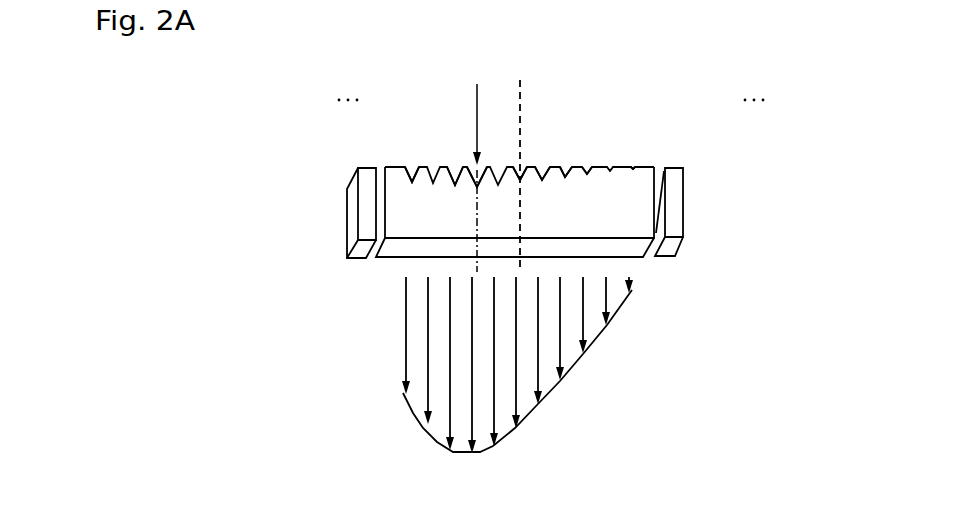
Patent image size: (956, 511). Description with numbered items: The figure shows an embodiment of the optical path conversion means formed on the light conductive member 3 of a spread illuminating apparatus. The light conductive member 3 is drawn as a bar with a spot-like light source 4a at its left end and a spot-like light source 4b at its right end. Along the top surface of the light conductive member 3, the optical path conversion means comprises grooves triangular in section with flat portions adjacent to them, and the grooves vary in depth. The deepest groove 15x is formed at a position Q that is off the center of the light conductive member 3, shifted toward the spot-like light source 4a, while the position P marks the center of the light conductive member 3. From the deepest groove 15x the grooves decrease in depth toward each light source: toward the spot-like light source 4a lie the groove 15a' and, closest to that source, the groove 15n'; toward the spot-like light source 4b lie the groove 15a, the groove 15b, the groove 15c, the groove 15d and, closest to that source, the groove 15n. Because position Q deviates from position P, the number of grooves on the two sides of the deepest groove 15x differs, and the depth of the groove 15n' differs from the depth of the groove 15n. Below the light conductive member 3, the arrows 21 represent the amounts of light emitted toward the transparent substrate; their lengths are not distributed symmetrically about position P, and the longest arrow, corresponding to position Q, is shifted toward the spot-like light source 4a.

The light conductive member 3 is at (433, 214).
The spot-like light source 4a is at (367, 217).
The spot-like light source 4b is at (673, 197).
The groove 15n' is at (353, 133).
The groove 15a' is at (414, 134).
The deepest groove 15x is at (473, 169).
The groove 15a is at (542, 132).
The groove 15b is at (542, 168).
The groove 15c is at (566, 168).
The groove 15d is at (588, 168).
The groove 15n is at (718, 126).
The arrows 21 is at (493, 343).
The position Q is at (481, 163).
The position P is at (522, 163).